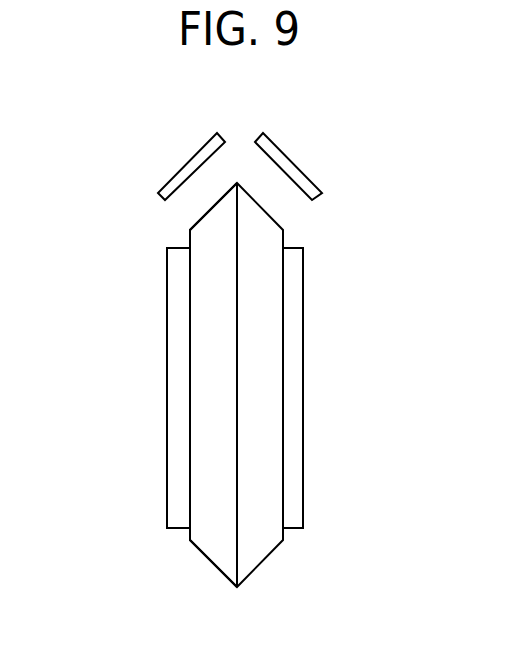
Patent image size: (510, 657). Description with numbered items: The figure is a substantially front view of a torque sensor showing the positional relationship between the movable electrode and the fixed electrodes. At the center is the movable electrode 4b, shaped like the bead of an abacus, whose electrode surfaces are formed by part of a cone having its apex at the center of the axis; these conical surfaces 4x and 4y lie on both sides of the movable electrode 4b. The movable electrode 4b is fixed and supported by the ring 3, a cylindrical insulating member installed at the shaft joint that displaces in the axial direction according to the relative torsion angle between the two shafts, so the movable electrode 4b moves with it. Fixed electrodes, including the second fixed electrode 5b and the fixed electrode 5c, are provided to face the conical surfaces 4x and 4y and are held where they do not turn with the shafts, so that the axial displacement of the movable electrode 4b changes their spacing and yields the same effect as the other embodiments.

The ring 3 is at (298, 372).
The movable electrode 4b is at (283, 305).
The conical surface 4x is at (267, 208).
The conical surface 4y is at (200, 220).
The second fixed electrode 5b is at (192, 158).
The fixed electrode 5c is at (300, 167).